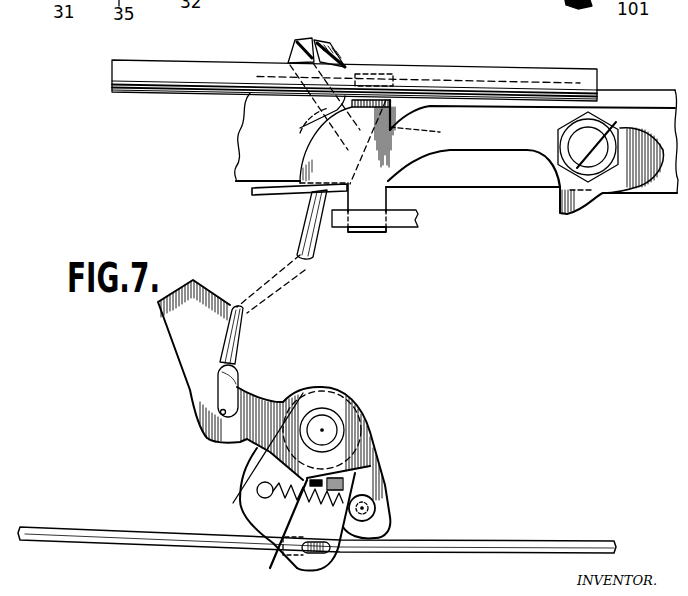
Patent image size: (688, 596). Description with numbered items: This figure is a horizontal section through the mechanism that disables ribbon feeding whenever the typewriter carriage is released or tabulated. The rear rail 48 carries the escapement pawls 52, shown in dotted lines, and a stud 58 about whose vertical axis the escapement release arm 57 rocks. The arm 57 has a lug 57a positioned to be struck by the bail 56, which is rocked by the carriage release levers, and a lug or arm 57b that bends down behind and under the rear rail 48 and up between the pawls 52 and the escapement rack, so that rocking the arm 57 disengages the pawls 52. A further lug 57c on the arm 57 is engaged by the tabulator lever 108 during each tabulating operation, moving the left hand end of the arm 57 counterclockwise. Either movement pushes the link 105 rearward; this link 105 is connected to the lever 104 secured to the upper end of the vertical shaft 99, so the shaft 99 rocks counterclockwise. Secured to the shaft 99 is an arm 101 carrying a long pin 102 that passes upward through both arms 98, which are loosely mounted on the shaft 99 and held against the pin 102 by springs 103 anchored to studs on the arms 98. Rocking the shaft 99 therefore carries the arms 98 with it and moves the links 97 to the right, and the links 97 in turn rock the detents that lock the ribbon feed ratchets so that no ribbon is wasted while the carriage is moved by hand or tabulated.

The escapement pawls 52 is at (315, 40).
The bail 56 is at (236, 76).
The escapement release arm 57 is at (518, 118).
The lug 57a is at (309, 118).
The lug or arm 57b is at (368, 189).
The lug 57c is at (363, 233).
The stud 58 is at (616, 122).
The rear rail 48 is at (243, 172).
The link 105 is at (316, 218).
The tabulator lever 108 is at (401, 224).
The lever 104 is at (200, 390).
The vertical shaft 99 is at (324, 430).
The arms 98 is at (257, 467).
The arm 101 is at (372, 467).
The pin 102 is at (377, 508).
The springs 103 is at (270, 568).
The links 97 is at (167, 540).